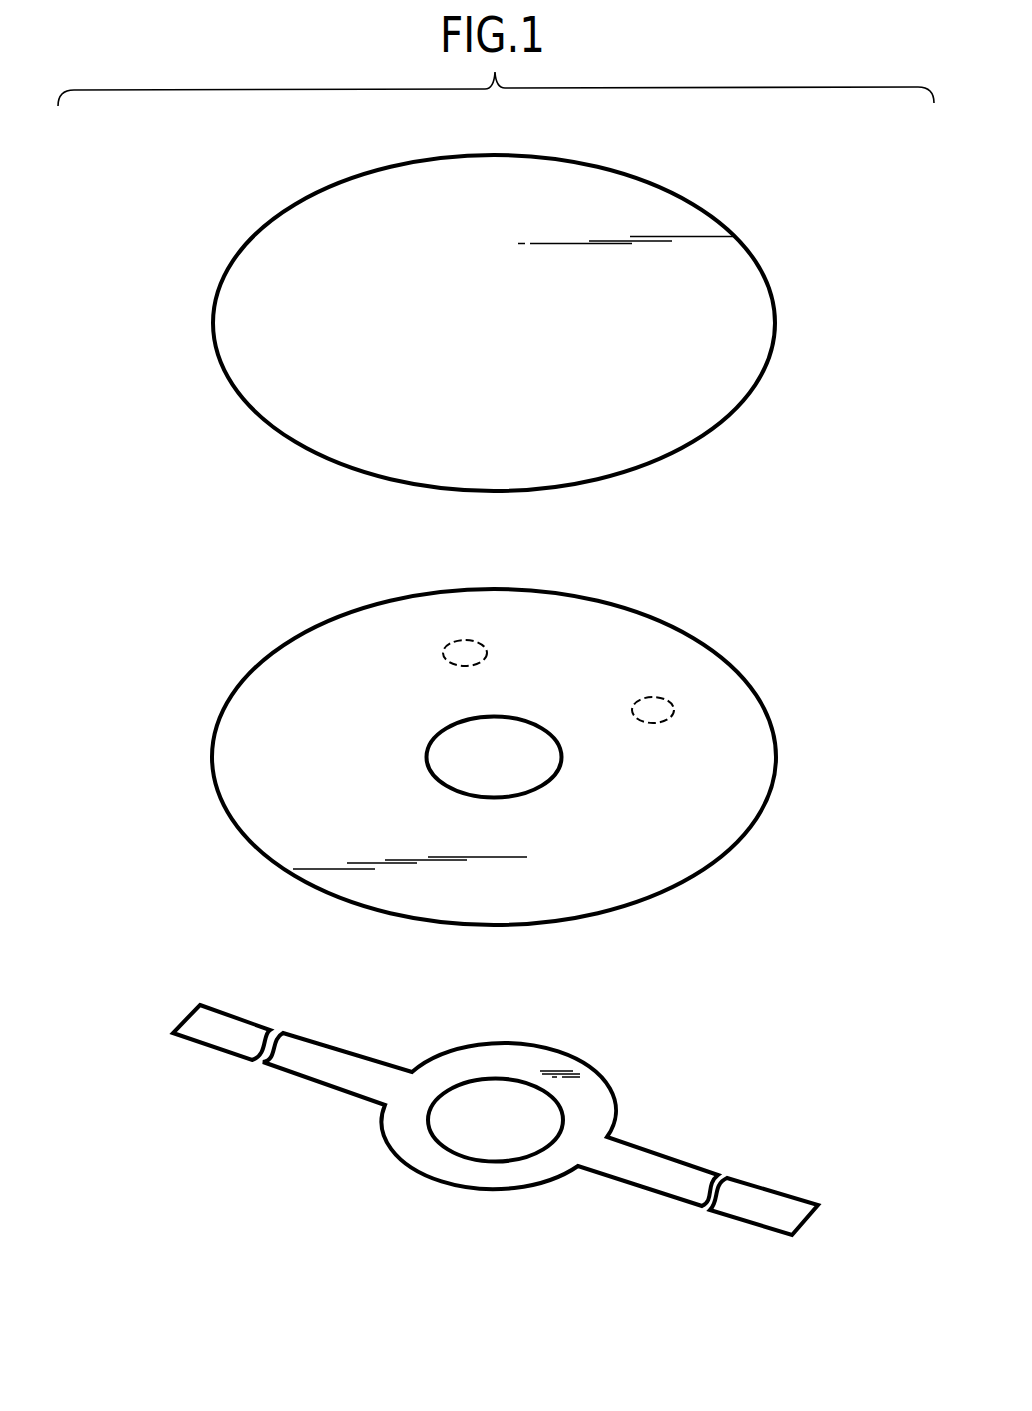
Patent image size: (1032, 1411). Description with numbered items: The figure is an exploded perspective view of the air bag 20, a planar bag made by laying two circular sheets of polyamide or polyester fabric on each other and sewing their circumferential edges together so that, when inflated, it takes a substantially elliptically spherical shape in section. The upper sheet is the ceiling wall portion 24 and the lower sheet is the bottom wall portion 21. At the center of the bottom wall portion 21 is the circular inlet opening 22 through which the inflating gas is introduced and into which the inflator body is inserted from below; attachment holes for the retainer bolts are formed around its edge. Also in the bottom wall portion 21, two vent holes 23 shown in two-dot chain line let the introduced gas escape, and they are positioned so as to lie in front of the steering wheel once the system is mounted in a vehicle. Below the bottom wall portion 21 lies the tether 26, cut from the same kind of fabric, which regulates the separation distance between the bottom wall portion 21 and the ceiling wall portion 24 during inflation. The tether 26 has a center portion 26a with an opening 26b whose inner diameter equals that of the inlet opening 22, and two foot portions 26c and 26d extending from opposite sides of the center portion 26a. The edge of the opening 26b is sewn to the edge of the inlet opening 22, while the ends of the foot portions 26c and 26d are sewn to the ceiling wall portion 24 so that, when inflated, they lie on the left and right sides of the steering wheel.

The air bag 20 is at (131, 485).
The bottom wall portion 21 is at (220, 678).
The inlet opening 22 is at (517, 773).
The vent holes 23 is at (653, 697).
The ceiling wall portion 24 is at (250, 448).
The tether 26 is at (475, 1081).
The center portion 26a is at (490, 1177).
The opening 26b is at (477, 1095).
The foot portion 26c is at (315, 1068).
The foot portion 26d is at (652, 1163).